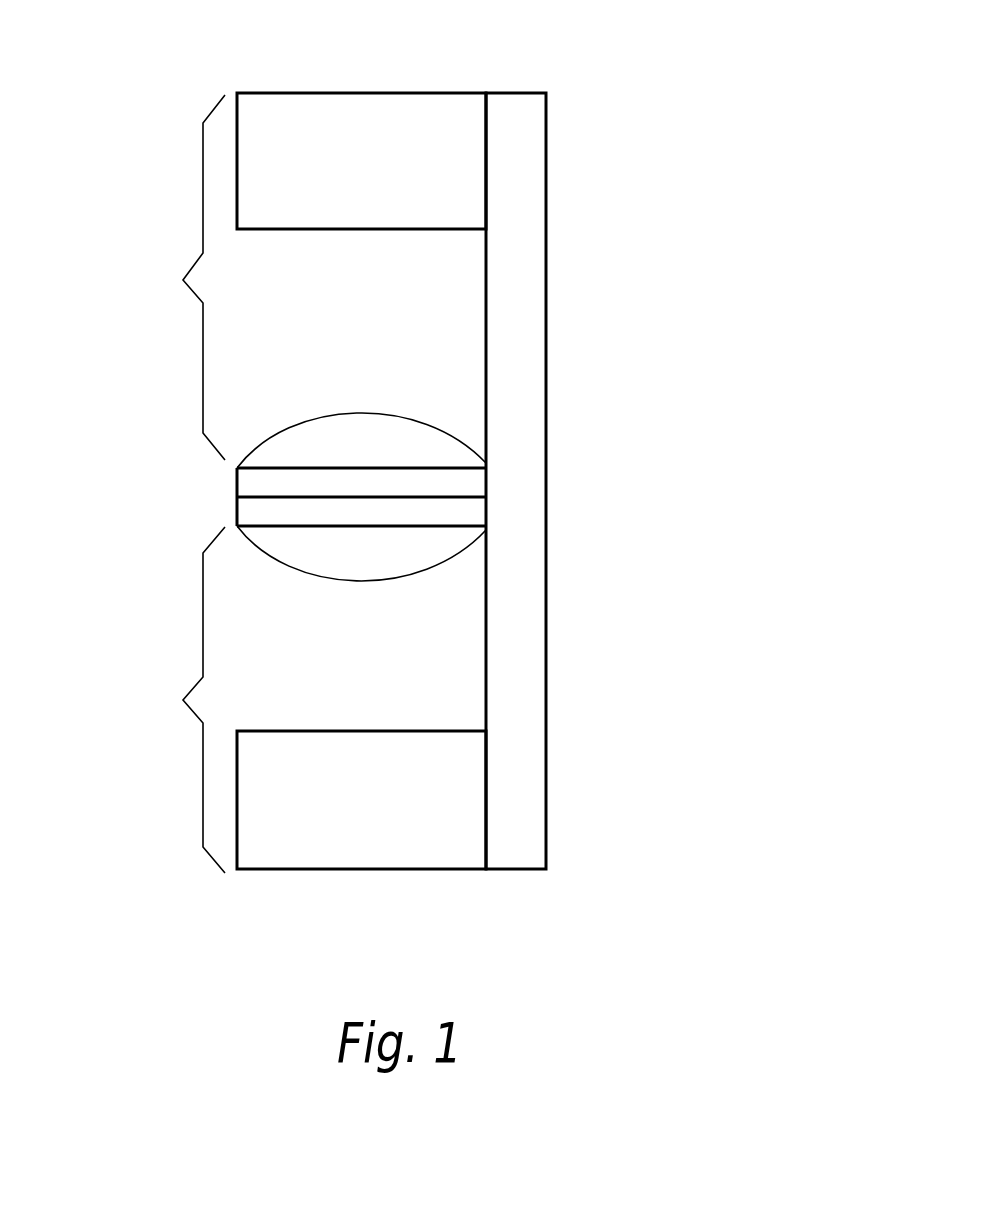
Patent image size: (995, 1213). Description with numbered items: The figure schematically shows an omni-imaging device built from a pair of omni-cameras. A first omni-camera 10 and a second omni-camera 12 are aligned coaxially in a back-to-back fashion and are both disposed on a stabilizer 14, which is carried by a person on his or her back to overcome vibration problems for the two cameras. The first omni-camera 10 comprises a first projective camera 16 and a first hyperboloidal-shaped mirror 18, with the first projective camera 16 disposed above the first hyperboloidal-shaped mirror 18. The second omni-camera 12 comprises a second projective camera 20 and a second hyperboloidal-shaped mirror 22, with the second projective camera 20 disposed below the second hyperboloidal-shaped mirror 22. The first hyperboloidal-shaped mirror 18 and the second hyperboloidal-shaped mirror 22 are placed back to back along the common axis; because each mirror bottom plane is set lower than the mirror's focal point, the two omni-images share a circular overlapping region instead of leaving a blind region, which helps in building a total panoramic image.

The first omni-camera 10 is at (127, 277).
The second omni-camera 12 is at (127, 700).
The stabilizer 14 is at (540, 278).
The first projective camera 16 is at (390, 45).
The first hyperboloidal-shaped mirror 18 is at (372, 442).
The second projective camera 20 is at (327, 847).
The second hyperboloidal-shaped mirror 22 is at (375, 545).